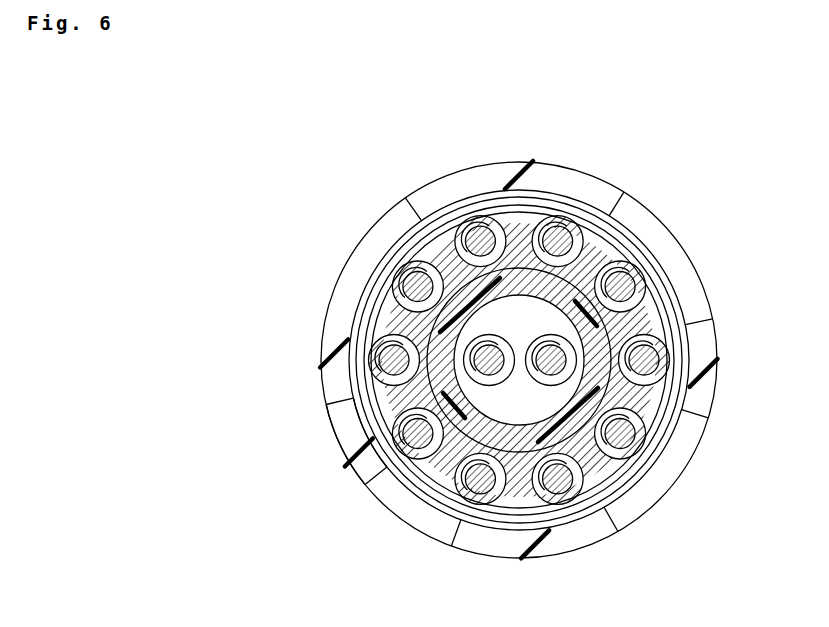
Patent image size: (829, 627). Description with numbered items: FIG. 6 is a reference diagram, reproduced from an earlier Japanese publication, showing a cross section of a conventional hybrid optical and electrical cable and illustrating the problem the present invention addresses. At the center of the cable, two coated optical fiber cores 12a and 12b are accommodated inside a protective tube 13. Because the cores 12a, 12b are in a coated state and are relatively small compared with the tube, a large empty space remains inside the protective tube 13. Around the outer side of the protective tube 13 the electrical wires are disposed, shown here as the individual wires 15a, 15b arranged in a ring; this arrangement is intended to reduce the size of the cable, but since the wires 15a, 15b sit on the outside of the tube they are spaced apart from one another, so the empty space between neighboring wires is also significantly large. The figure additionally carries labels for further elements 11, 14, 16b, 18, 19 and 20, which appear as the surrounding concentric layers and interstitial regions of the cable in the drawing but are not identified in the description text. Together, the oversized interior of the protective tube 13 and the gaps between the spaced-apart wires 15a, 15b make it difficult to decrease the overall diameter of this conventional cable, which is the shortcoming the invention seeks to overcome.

The outer sheath 11 is at (678, 194).
The optical fiber core 12a is at (421, 208).
The optical fiber core 12b is at (523, 327).
The protective tube 13 is at (345, 300).
The central conductor 14 is at (325, 385).
The conductor 15a is at (599, 212).
The conductor 15b is at (405, 235).
The insulation 16b is at (460, 205).
The inner layer 18 is at (372, 485).
The intermediate layer 19 is at (345, 445).
The central conductor 20 is at (325, 393).